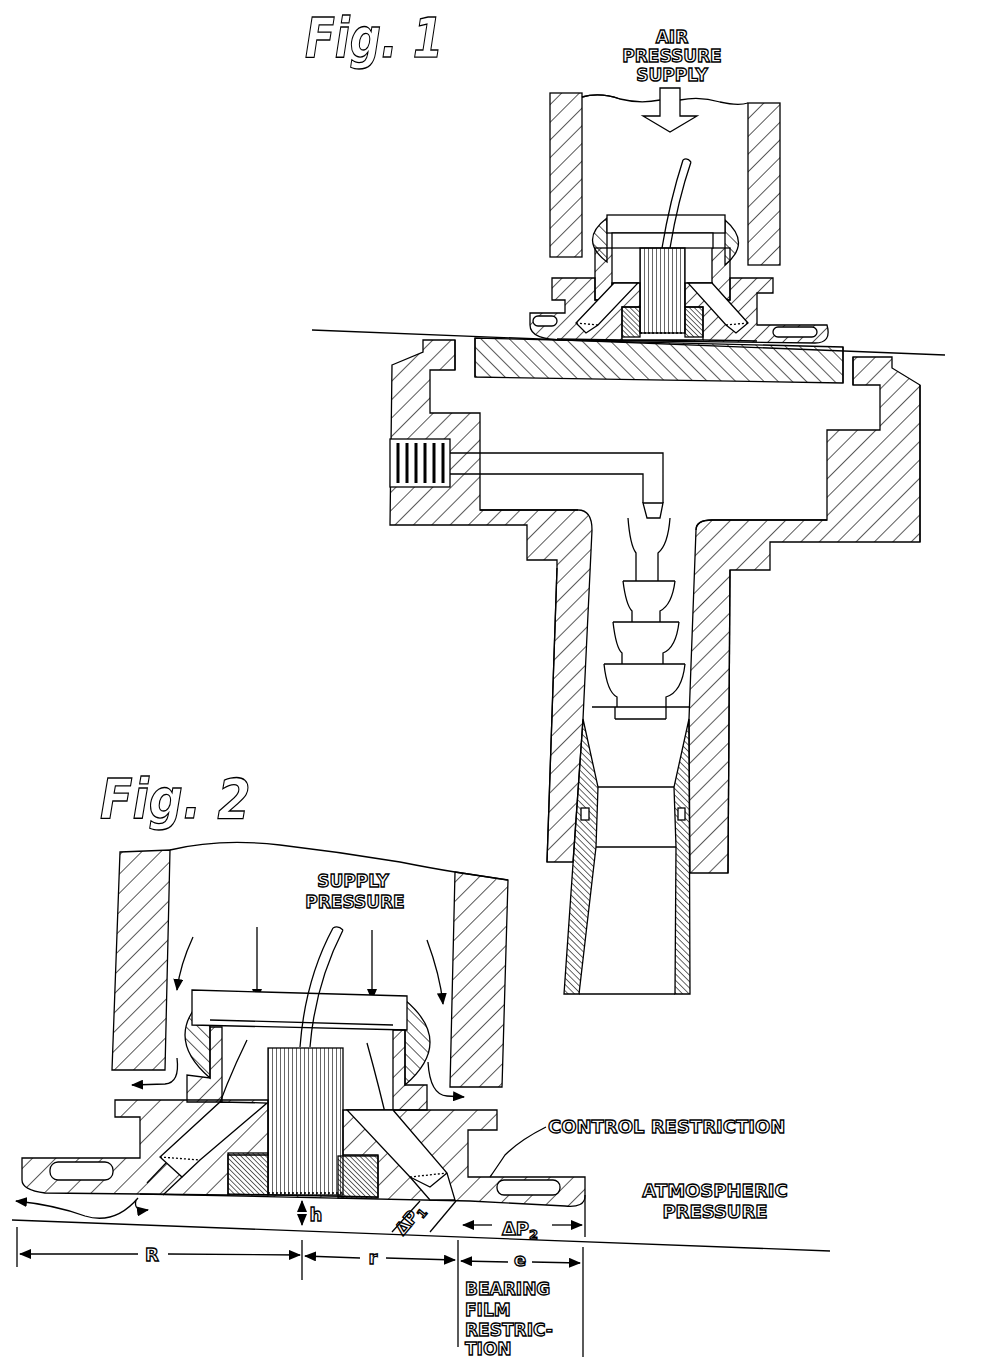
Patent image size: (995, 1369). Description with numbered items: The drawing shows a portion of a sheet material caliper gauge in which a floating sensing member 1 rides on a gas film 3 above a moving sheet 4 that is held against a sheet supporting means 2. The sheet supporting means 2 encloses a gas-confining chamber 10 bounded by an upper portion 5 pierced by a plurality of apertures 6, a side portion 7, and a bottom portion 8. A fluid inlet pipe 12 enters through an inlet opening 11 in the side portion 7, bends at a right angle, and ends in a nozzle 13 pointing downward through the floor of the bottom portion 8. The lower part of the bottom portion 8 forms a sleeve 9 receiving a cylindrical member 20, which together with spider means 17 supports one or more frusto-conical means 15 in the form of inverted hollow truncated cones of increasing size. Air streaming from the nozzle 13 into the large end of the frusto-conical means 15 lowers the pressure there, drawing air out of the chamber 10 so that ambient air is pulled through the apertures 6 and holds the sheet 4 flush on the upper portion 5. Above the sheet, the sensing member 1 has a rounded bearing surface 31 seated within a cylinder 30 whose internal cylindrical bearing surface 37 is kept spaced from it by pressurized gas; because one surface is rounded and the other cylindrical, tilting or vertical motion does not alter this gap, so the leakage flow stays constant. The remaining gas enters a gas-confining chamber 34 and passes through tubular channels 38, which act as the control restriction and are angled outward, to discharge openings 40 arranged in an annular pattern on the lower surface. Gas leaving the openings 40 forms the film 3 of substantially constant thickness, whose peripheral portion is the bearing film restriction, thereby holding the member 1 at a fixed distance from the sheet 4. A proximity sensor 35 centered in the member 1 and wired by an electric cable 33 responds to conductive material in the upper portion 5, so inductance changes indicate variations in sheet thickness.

In FIG. 1, the floating sensing member 1 is at (791, 279).
In FIG. 2, the floating sensing member 1 is at (511, 1115).
In FIG. 1, the sheet supporting means 2 is at (362, 421).
In FIG. 1, the gas film 3 is at (832, 343).
In FIG. 2, the gas film 3 is at (259, 1229).
In FIG. 1, the sheet or web of material 4 is at (350, 330).
In FIG. 2, the sheet or web of material 4 is at (193, 1226).
In FIG. 1, the upper portion 5 is at (592, 376).
In FIG. 1, the apertures 6 is at (465, 370).
In FIG. 1, the side portion 7 is at (833, 480).
In FIG. 1, the bottom portion 8 is at (750, 527).
In FIG. 1, the sleeve 9 is at (564, 651).
In FIG. 1, the gas-confining chamber 10 is at (715, 468).
In FIG. 1, the inlet opening 11 is at (390, 472).
In FIG. 1, the fluid inlet pipe 12 is at (548, 457).
In FIG. 1, the nozzle 13 is at (650, 507).
In FIG. 1, the frusto-conical means 15 is at (625, 538).
In FIG. 1, the spider means 17 is at (673, 562).
In FIG. 1, the cylindrical member 20 is at (685, 771).
In FIG. 1, the cylinder 30 is at (597, 136).
In FIG. 2, the cylinder 30 is at (198, 896).
In FIG. 1, the rounded bearing surface 31 is at (593, 213).
In FIG. 2, the rounded bearing surface 31 is at (172, 1017).
In FIG. 1, the electric cable 33 is at (683, 175).
In FIG. 2, the electric cable 33 is at (321, 987).
In FIG. 1, the gas-confining chamber 34 is at (635, 243).
In FIG. 1, the proximity sensor 35 is at (673, 247).
In FIG. 2, the proximity sensor 35 is at (303, 1123).
In FIG. 1, the internal cylindrical bearing surface 37 is at (593, 161).
In FIG. 2, the internal cylindrical bearing surface 37 is at (172, 962).
In FIG. 1, the tubular channels 38 is at (568, 320).
In FIG. 2, the tubular channels 38 is at (157, 1177).
In FIG. 1, the discharge openings 40 is at (503, 332).
In FIG. 2, the discharge openings 40 is at (133, 1187).